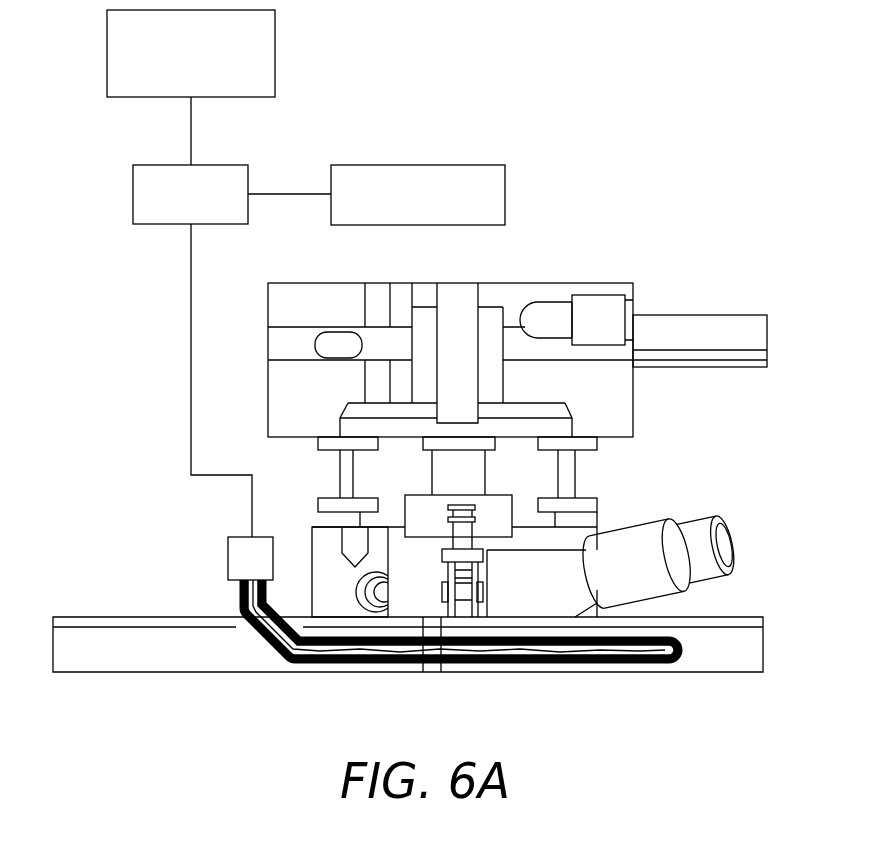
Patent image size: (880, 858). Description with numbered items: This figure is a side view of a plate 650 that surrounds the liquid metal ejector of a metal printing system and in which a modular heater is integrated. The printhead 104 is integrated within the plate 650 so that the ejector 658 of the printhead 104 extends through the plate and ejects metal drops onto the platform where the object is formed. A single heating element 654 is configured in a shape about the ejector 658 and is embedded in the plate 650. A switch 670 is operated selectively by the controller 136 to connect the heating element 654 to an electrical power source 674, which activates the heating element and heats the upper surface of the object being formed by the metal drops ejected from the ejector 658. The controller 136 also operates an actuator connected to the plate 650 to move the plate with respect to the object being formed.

The electrical power source 674 is at (277, 54).
The switch 670 is at (133, 194).
The controller 136 is at (450, 165).
The printhead 104 is at (646, 464).
The plate 650 is at (140, 617).
The heating element 654 is at (571, 653).
The ejector 658 is at (431, 673).